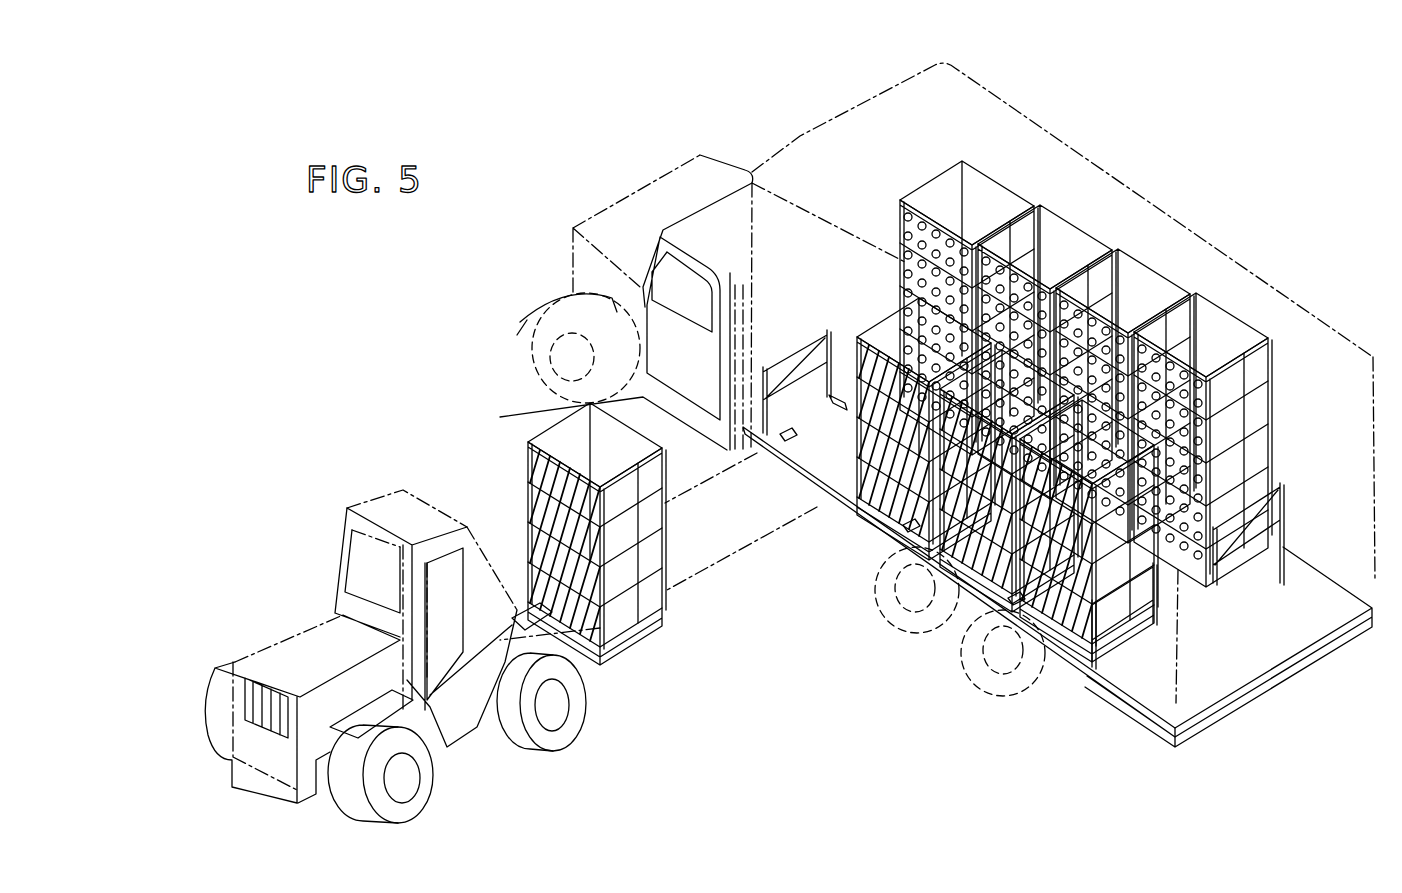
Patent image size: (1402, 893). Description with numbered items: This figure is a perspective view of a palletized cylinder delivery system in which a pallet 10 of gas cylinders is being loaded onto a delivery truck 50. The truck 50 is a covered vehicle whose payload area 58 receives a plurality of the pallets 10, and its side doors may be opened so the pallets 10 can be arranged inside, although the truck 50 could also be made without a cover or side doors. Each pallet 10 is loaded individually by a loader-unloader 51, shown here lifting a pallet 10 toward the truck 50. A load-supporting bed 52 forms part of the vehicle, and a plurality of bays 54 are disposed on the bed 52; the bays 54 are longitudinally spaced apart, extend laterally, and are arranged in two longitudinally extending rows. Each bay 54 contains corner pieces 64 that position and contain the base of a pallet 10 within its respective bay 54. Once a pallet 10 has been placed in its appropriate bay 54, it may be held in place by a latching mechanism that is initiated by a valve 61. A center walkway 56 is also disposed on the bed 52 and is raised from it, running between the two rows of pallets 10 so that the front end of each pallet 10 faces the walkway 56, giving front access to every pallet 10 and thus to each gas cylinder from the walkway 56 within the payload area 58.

The pallet 10 is at (514, 419).
The truck 50 is at (750, 126).
The loader-unloader 51 is at (358, 468).
The load-supporting bed 52 is at (1150, 678).
The bay 54 is at (830, 470).
The center walkway 56 is at (1193, 590).
The payload area 58 is at (1124, 208).
The valve 61 is at (955, 602).
The corner pieces 64 is at (781, 438).